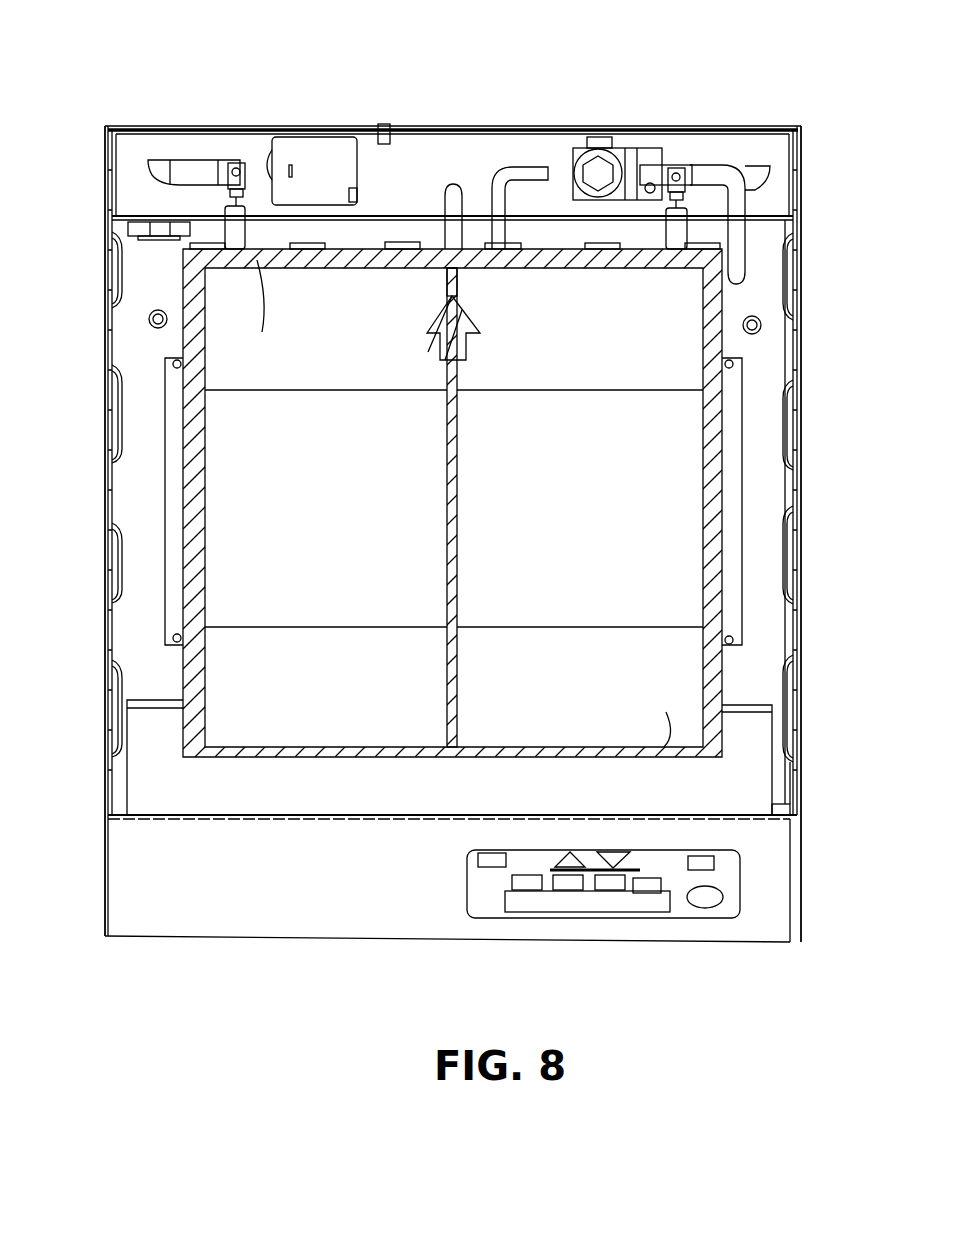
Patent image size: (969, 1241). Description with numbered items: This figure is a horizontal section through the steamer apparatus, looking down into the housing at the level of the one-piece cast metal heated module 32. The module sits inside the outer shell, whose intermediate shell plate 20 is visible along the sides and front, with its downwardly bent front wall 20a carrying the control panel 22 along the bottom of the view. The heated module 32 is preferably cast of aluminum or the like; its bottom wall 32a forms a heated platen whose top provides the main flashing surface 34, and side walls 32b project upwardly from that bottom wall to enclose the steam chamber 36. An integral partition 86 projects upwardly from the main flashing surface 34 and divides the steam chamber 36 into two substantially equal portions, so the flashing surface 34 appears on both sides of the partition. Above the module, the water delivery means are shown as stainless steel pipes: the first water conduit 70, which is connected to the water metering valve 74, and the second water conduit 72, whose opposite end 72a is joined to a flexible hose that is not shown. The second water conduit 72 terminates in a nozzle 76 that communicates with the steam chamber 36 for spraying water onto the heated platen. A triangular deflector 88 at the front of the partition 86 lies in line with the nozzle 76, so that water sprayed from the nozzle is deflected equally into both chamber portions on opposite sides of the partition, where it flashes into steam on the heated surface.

The intermediate shell plate 20 is at (128, 780).
The front wall 20a is at (343, 898).
The control panel 22 is at (682, 882).
The heated module 32 is at (740, 668).
The bottom wall 32a is at (680, 508).
The side walls 32b is at (198, 297).
The main flashing surface 34 is at (325, 533).
The steam chamber 36 is at (650, 465).
The first water conduit 70 is at (760, 185).
The second water conduit 72 is at (458, 175).
The end of second water conduit 72a is at (540, 176).
The water metering valve 74 is at (603, 160).
The nozzle 76 is at (447, 283).
The integral partition 86 is at (457, 442).
The triangular deflector 88 is at (462, 308).